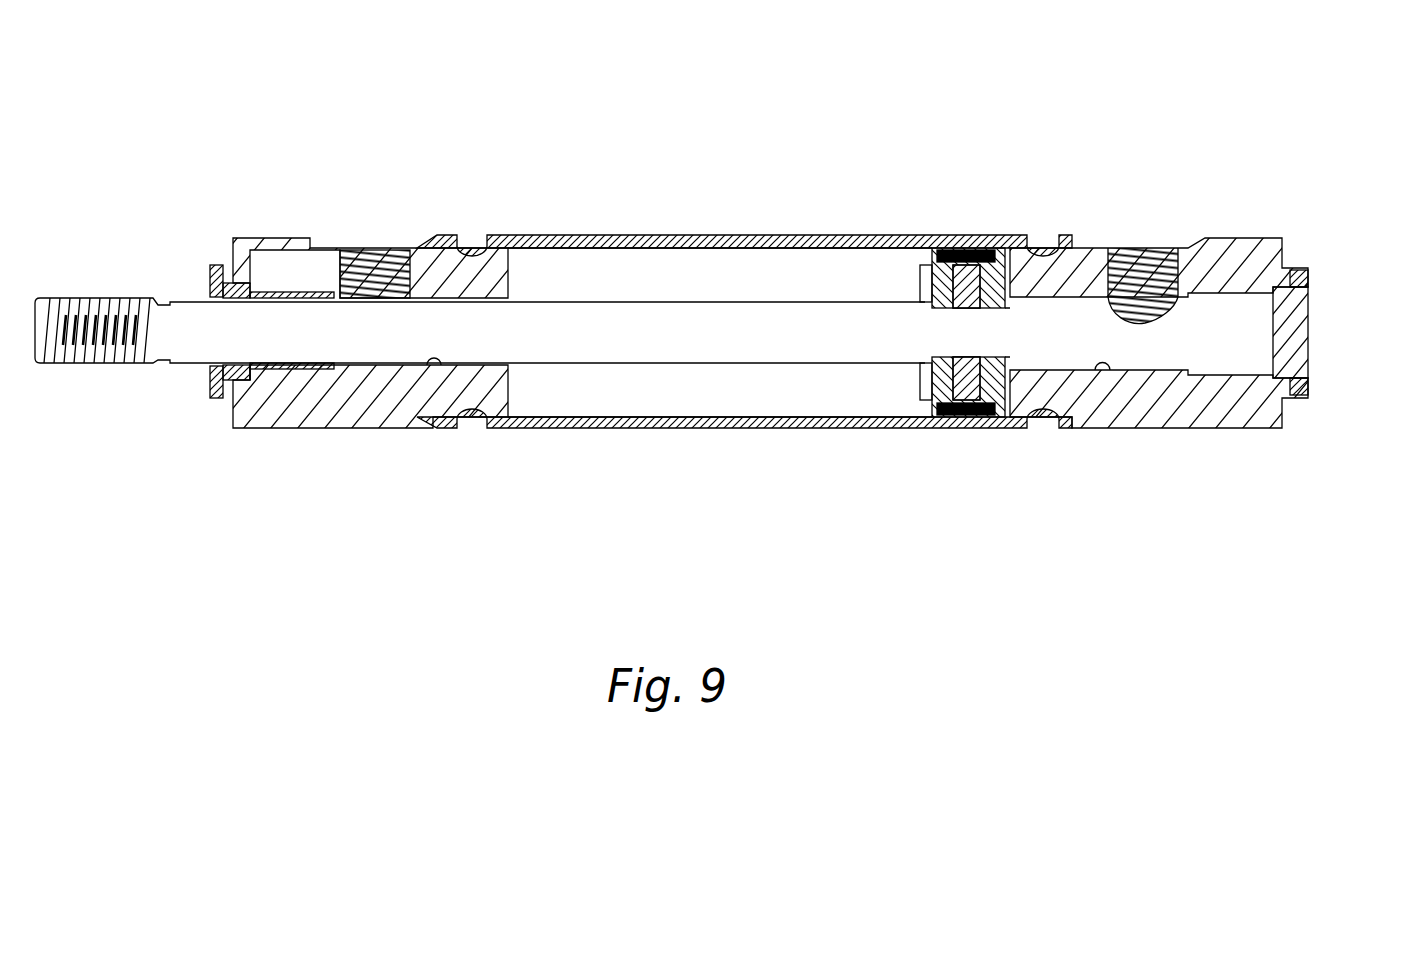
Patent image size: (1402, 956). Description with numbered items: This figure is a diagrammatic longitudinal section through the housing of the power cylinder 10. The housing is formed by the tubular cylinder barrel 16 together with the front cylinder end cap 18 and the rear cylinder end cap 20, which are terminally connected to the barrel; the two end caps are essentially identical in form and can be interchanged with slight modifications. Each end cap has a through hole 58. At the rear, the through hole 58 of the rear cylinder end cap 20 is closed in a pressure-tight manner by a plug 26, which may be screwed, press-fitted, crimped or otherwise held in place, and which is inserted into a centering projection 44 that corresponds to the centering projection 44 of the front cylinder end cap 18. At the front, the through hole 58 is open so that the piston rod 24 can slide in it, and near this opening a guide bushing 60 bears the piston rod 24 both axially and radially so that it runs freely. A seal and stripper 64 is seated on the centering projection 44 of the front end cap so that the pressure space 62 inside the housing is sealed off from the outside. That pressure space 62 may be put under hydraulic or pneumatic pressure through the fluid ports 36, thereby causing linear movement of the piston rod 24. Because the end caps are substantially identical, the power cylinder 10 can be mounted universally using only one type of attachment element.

The power cylinder 10 is at (647, 205).
The tubular cylinder barrel 16 is at (797, 242).
The front cylinder end cap 18 is at (373, 415).
The rear cylinder end cap 20 is at (1214, 410).
The piston rod 24 is at (90, 352).
The plug 26 is at (1300, 312).
The fluid ports 36 is at (372, 262).
The centering projection 44 is at (223, 400).
The through hole 58 is at (432, 367).
The guide bushing 60 is at (288, 292).
The pressure space 62 is at (698, 402).
The seal and stripper 64 is at (222, 282).